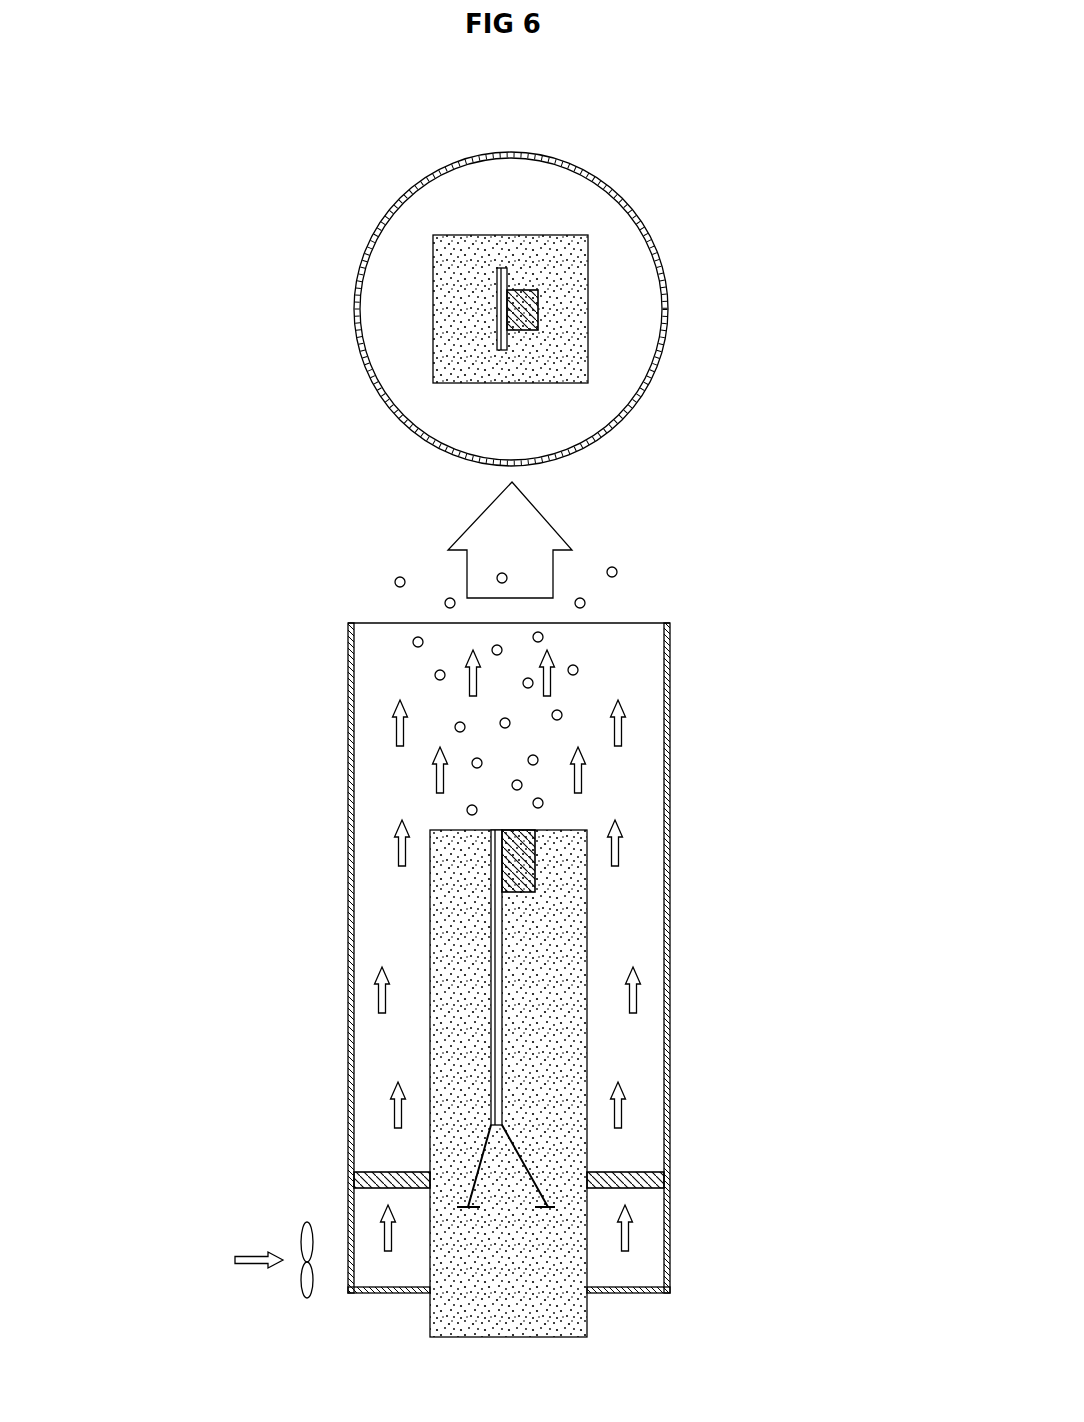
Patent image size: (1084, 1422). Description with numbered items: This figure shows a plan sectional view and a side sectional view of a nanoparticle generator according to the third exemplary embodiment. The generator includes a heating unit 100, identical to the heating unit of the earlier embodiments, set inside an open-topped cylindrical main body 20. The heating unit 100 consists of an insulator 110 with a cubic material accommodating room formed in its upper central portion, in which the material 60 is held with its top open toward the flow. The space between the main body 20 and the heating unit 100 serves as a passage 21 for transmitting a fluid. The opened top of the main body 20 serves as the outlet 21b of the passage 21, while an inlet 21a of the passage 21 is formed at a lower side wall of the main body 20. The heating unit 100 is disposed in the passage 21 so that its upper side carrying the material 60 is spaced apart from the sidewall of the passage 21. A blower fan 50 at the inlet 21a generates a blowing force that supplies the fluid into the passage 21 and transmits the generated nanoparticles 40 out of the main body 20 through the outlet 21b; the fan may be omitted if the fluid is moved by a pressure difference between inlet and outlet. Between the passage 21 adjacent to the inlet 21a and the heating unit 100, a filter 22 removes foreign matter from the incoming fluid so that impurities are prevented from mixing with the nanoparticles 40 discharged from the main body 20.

The main body 20 is at (669, 325).
The passage 21 is at (383, 303).
The inlet 21a is at (349, 1250).
The outlet 21b is at (665, 632).
The filter 22 is at (640, 1173).
The nanoparticles 40 is at (395, 581).
The blower fan 50 is at (307, 1298).
The material 60 is at (527, 313).
The heating unit 100 is at (605, 288).
The insulator 110 is at (565, 252).